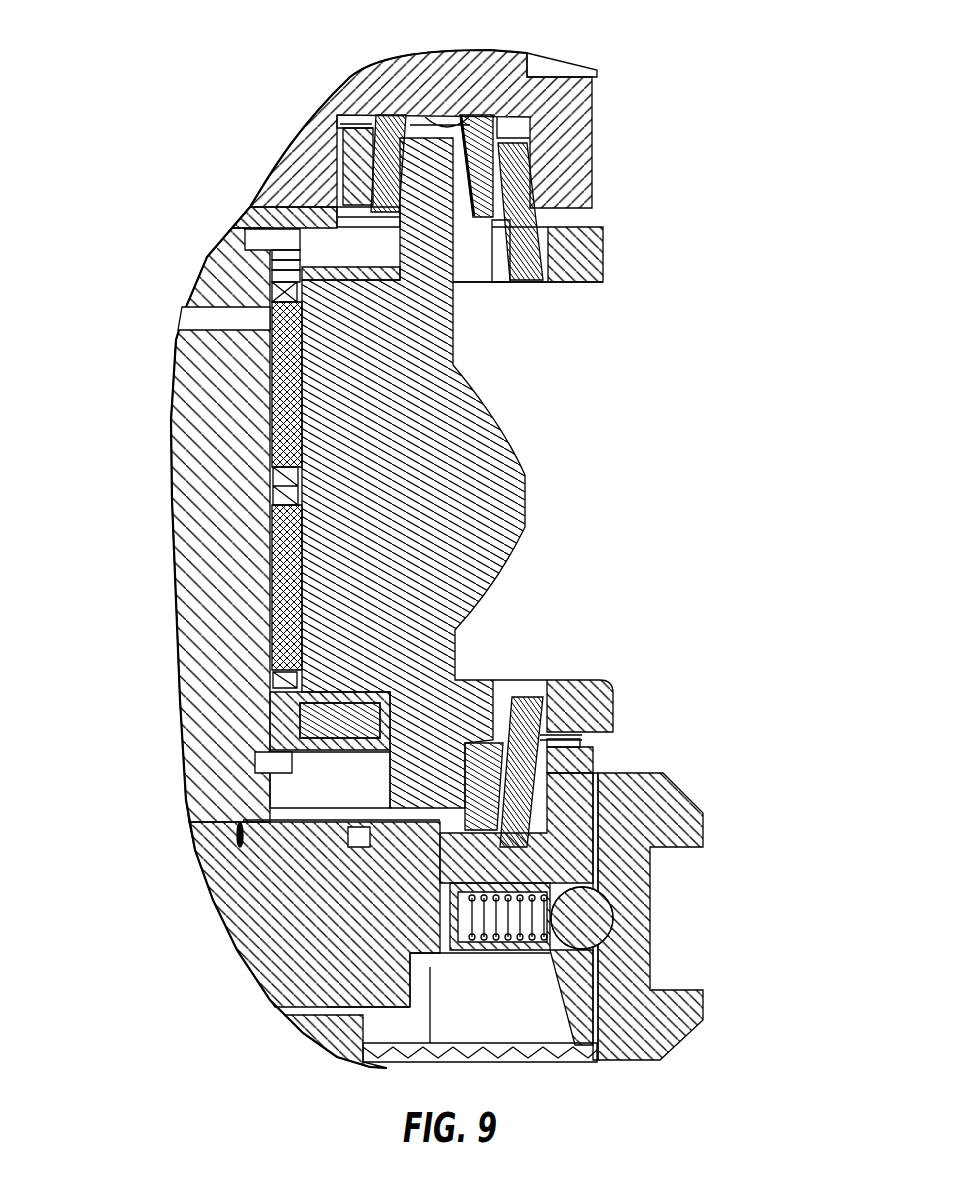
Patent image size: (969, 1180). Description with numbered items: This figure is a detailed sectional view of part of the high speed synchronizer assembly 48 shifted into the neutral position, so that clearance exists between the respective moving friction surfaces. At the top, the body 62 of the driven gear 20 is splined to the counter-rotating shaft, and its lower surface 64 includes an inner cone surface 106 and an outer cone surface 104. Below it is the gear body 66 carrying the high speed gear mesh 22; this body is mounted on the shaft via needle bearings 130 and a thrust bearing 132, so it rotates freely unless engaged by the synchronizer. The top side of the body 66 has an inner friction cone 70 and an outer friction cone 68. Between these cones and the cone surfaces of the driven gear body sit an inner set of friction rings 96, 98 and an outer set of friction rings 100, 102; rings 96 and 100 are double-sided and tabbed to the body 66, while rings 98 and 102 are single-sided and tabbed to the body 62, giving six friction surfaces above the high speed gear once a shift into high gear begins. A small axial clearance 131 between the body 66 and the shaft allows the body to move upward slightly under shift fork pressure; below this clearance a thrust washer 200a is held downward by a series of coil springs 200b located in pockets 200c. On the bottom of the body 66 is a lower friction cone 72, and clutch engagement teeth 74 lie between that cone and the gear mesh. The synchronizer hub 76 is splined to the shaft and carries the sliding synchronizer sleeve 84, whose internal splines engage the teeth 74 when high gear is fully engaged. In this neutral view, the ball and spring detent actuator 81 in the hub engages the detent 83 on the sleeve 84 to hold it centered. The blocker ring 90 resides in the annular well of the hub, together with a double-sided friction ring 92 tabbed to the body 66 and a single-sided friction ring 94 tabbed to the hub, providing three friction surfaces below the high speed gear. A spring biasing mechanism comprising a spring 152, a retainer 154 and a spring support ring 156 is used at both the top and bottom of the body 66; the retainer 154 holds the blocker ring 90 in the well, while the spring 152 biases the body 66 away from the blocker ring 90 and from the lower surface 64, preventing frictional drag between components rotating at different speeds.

The driven gear 20 is at (530, 66).
The high speed gear mesh 22 is at (528, 488).
The high speed synchronizer assembly 48 is at (652, 1068).
The gear body 62 is at (443, 67).
The lower surface 64 is at (352, 122).
The gear body 66 is at (432, 510).
The outer friction cone 68 is at (487, 282).
The inner friction cone 70 is at (303, 213).
The friction cone 72 is at (468, 806).
The clutch engagement teeth 74 is at (598, 693).
The synchronizer hub 76 is at (325, 985).
The ball and spring detent actuator 81 is at (593, 1057).
The detent 83 is at (607, 920).
The synchronizer sleeve 84 is at (690, 818).
The blocker ring 90 is at (612, 770).
The double-sided friction ring 92 is at (527, 690).
The single-sided friction ring 94 is at (490, 700).
The inner friction ring 96 is at (330, 195).
The inner friction ring 98 is at (345, 165).
The outer friction ring 100 is at (537, 282).
The outer friction ring 102 is at (492, 190).
The outer cone surface 104 is at (262, 167).
The inner cone surface 106 is at (532, 137).
The needle bearings 130 is at (283, 378).
The axial clearance 131 is at (293, 264).
The thrust bearing 132 is at (280, 718).
The spring 152 is at (430, 117).
The retainer 154 is at (590, 748).
The spring support ring 156 is at (273, 222).
The thrust washer 200a is at (307, 243).
The coil springs 200b is at (280, 240).
The pockets 200c is at (293, 255).